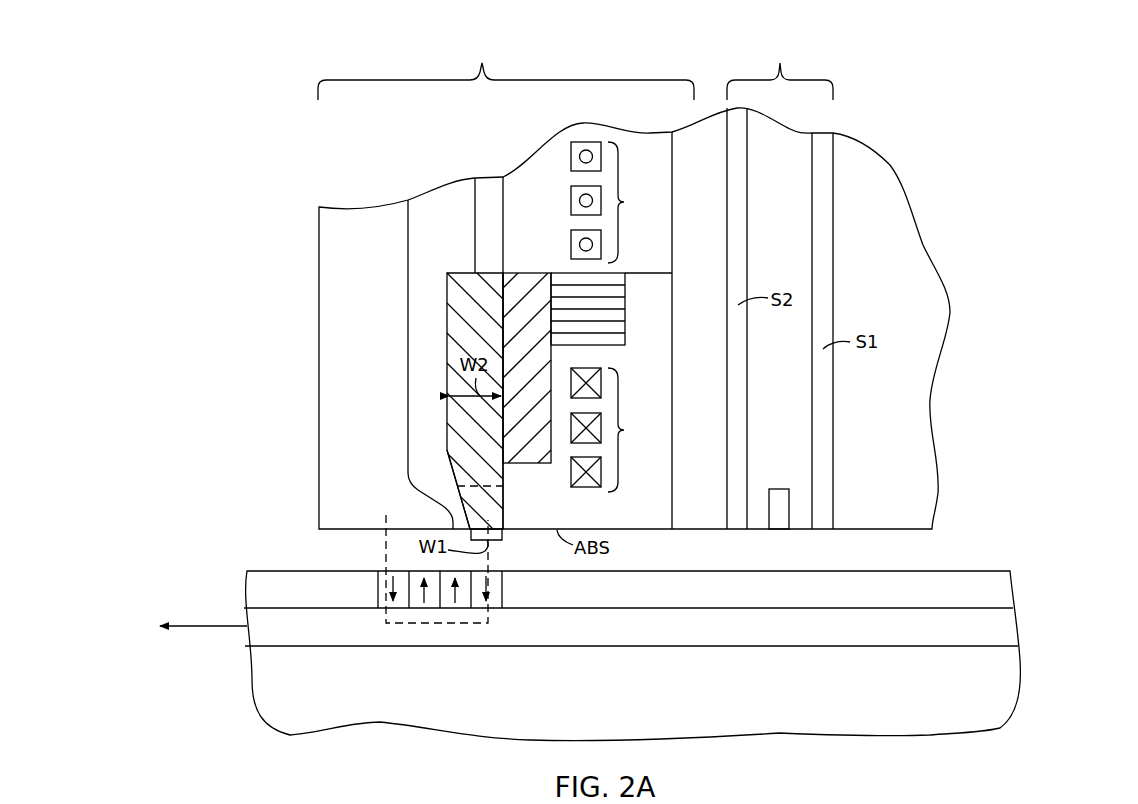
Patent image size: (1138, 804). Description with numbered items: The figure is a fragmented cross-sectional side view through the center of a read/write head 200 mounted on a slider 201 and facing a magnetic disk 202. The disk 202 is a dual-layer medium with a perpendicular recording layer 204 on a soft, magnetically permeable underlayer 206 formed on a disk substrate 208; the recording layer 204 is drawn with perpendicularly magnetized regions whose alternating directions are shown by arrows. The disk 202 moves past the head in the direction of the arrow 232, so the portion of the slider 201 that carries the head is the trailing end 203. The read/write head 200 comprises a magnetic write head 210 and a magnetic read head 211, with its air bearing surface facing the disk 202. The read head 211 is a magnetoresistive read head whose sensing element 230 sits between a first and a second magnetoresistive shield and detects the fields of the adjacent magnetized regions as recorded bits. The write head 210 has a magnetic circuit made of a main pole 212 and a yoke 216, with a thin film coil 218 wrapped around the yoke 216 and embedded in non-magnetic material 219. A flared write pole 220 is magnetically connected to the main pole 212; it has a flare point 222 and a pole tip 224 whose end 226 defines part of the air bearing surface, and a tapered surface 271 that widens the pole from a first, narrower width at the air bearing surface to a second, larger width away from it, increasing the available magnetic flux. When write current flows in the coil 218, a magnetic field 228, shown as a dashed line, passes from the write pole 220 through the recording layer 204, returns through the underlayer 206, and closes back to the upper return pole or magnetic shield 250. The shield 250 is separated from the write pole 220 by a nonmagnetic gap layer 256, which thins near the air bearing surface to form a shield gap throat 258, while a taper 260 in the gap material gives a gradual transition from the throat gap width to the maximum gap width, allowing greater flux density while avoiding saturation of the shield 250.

The read/write head 200 is at (272, 162).
The slider 201 is at (923, 275).
The magnetic disk 202 is at (1035, 670).
The trailing end 203 is at (272, 347).
The recording layer 204 is at (1003, 588).
The underlayer 206 is at (1010, 630).
The disk substrate 208 is at (1003, 713).
The magnetic write head 210 is at (506, 68).
The magnetic read head 211 is at (780, 68).
The main pole 212 is at (525, 293).
The yoke 216 is at (617, 270).
The thin film coil 218 is at (617, 317).
The non-magnetic material 219 is at (521, 208).
The write pole 220 is at (468, 282).
The flare point 222 is at (485, 486).
The pole tip 224 is at (485, 510).
The end of write pole 226 is at (498, 538).
The magnetic field 228 is at (386, 548).
The MR sensing element 230 is at (781, 500).
The arrow 232 is at (204, 626).
The upper return pole or magnetic shield 250 is at (361, 220).
The nonmagnetic gap layer 256 is at (418, 322).
The shield gap throat 258 is at (443, 502).
The taper 260 is at (410, 483).
The tapered surface 271 is at (452, 487).